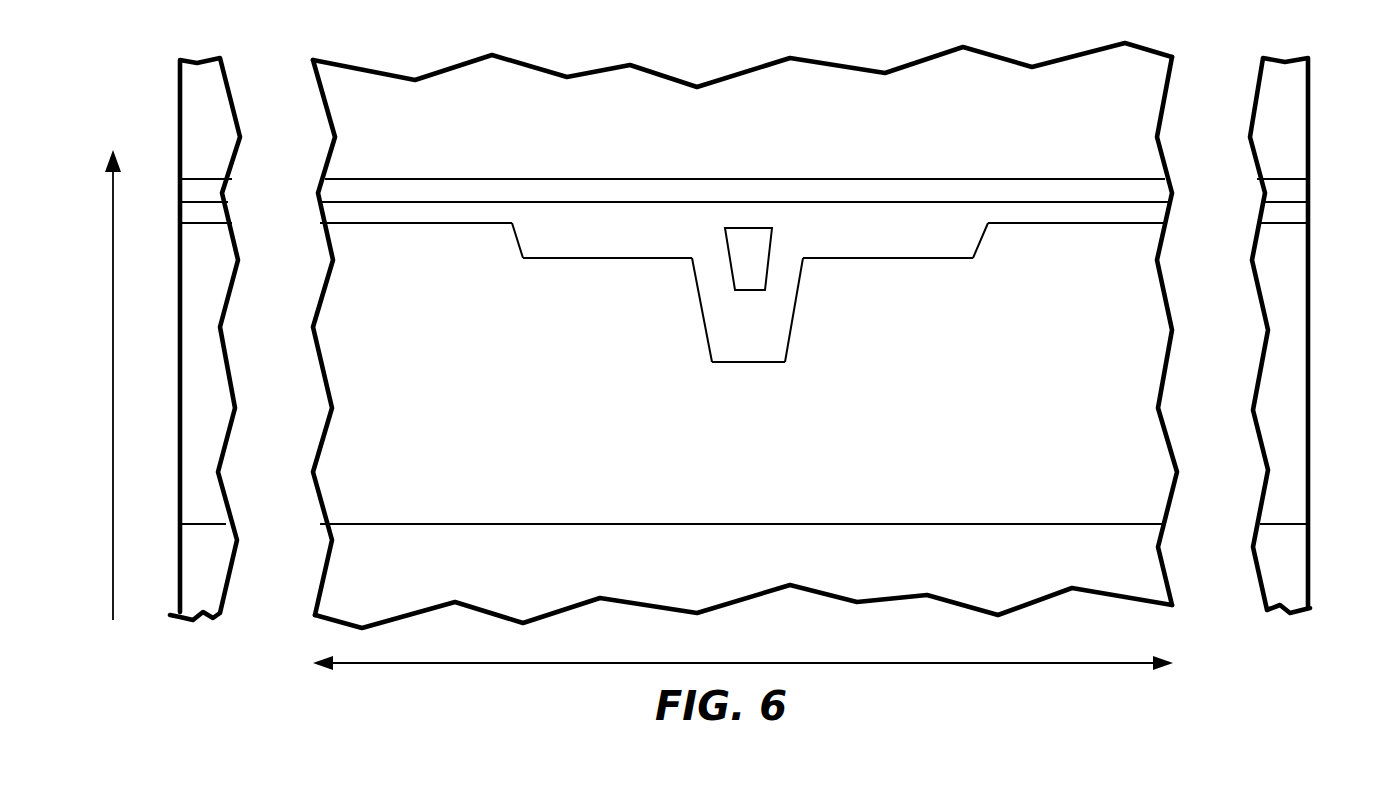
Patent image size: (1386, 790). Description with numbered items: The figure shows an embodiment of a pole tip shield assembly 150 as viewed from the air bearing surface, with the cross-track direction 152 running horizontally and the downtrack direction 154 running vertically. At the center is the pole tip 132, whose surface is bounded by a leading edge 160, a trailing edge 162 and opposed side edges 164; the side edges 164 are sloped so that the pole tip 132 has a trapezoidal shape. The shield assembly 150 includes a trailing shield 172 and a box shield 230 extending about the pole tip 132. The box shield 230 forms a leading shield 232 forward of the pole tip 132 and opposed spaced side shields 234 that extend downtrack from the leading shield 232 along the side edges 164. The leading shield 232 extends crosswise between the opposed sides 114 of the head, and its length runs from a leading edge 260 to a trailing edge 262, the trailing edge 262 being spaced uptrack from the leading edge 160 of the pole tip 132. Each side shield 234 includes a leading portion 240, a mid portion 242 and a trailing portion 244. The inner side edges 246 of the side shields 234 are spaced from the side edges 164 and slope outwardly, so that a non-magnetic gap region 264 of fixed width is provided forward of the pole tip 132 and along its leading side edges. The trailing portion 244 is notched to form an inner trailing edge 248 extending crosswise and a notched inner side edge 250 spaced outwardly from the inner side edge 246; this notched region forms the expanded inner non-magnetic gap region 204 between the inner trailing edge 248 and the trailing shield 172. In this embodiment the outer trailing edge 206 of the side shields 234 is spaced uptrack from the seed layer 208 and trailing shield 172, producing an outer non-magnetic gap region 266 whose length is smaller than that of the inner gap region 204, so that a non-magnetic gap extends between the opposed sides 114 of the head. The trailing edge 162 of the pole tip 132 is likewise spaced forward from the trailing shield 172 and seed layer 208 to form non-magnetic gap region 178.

The opposed sides of the head 114 is at (180, 377).
The pole tip 132 is at (778, 225).
The pole tip shield assembly 150 is at (1130, 250).
The cross-track direction 152 is at (437, 665).
The downtrack direction 154 is at (112, 275).
The leading edge 160 is at (745, 292).
The trailing edge 162 is at (726, 228).
The side edges 164 is at (727, 242).
The trailing shield 172 is at (742, 74).
The non-magnetic gap region 178 is at (768, 201).
The inner non-magnetic gap region 204 is at (748, 234).
The outer trailing edge 206 is at (362, 222).
The seed layer 208 is at (441, 186).
The box shield 230 is at (1120, 352).
The leading shield 232 is at (742, 489).
The side shields 234 is at (741, 284).
The leading portion 240 is at (414, 336).
The mid portion 242 is at (416, 289).
The trailing portion 244 is at (368, 241).
The inner side edges 246 is at (710, 291).
The inner trailing edge 248 is at (538, 256).
The notched inner side edge 250 is at (520, 238).
The leading edge of the leading shield 260 is at (673, 524).
The trailing edge of the leading shield 262 is at (754, 362).
The non-magnetic gap region 264 is at (774, 293).
The outer non-magnetic gap region 266 is at (463, 211).